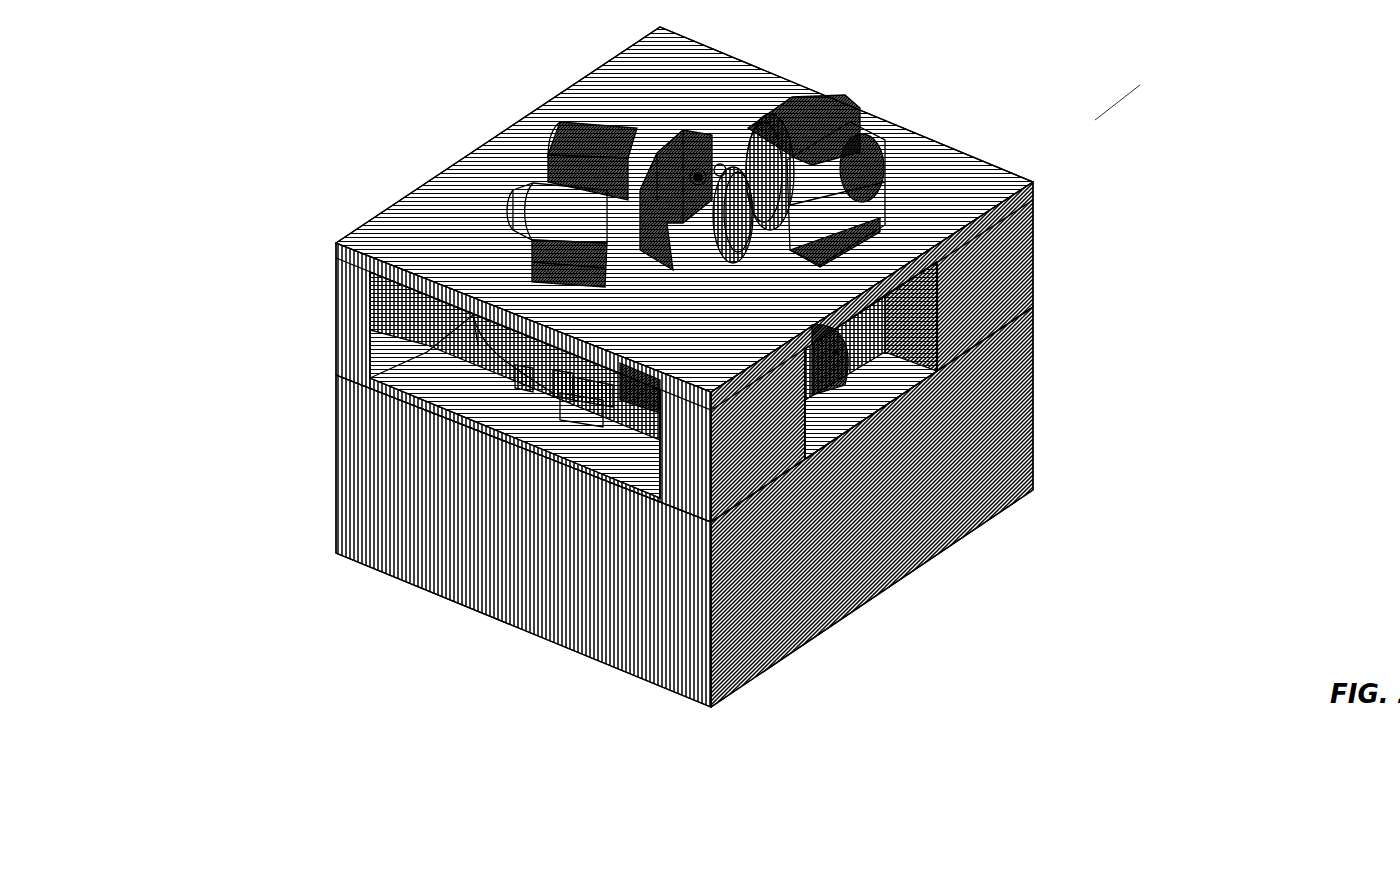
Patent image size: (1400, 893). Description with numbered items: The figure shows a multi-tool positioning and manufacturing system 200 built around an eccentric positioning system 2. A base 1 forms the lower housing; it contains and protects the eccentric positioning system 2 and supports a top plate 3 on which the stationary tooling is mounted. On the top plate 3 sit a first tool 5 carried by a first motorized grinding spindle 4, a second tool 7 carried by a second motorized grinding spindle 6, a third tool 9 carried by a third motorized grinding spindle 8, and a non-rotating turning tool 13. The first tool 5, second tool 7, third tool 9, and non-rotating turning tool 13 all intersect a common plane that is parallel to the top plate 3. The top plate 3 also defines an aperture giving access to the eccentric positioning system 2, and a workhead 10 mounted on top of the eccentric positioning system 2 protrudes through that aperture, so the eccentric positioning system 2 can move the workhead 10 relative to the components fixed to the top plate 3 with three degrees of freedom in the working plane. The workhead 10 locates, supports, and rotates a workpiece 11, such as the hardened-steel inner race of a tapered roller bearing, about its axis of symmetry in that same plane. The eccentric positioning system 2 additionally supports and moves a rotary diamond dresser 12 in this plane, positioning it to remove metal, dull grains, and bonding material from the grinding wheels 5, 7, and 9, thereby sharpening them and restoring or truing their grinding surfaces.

The multi-tool positioning and manufacturing system 200 is at (539, 363).
The base 1 is at (330, 460).
The eccentric positioning system 2 is at (985, 537).
The top plate 3 is at (425, 178).
The first motorized grinding spindle 4 is at (473, 150).
The first tool 5 is at (672, 322).
The second motorized grinding spindle 6 is at (913, 133).
The second tool 7 is at (790, 320).
The third motorized grinding spindle 8 is at (787, 100).
The third tool 9 is at (730, 116).
The workhead 10 is at (690, 130).
The workpiece 11 is at (698, 169).
The rotary diamond dresser 12 is at (720, 164).
The non-rotating turning tool 13 is at (543, 97).